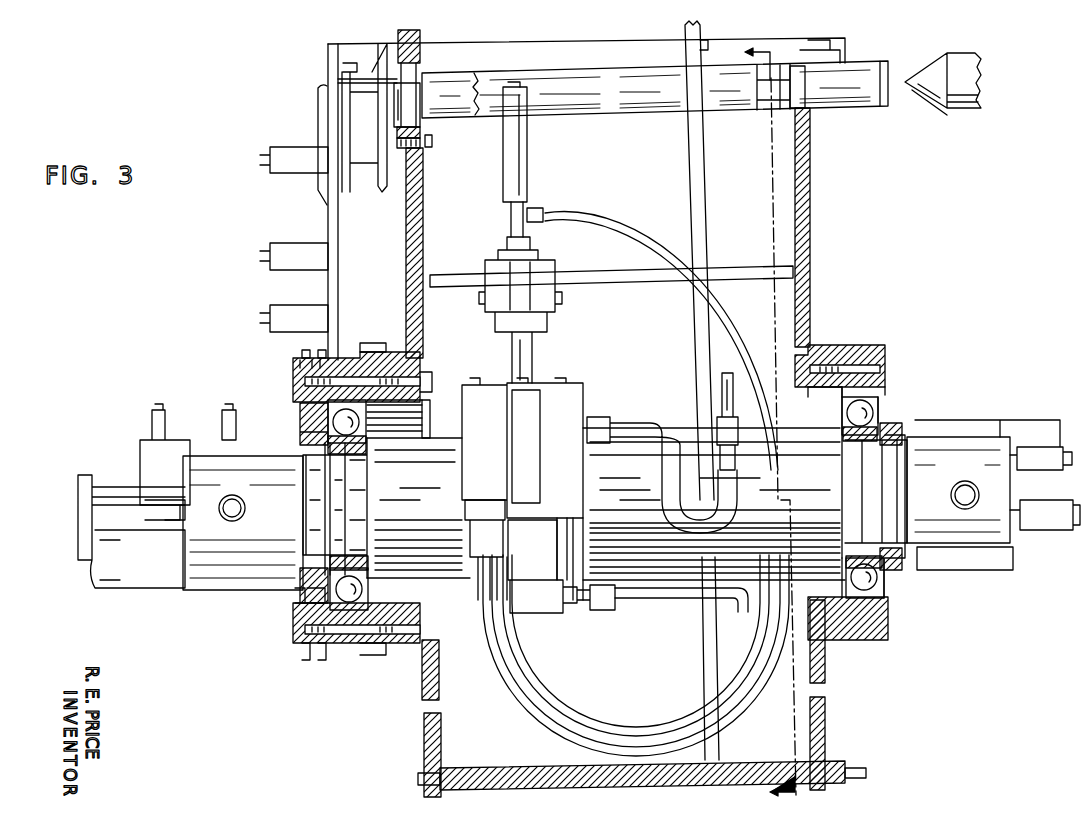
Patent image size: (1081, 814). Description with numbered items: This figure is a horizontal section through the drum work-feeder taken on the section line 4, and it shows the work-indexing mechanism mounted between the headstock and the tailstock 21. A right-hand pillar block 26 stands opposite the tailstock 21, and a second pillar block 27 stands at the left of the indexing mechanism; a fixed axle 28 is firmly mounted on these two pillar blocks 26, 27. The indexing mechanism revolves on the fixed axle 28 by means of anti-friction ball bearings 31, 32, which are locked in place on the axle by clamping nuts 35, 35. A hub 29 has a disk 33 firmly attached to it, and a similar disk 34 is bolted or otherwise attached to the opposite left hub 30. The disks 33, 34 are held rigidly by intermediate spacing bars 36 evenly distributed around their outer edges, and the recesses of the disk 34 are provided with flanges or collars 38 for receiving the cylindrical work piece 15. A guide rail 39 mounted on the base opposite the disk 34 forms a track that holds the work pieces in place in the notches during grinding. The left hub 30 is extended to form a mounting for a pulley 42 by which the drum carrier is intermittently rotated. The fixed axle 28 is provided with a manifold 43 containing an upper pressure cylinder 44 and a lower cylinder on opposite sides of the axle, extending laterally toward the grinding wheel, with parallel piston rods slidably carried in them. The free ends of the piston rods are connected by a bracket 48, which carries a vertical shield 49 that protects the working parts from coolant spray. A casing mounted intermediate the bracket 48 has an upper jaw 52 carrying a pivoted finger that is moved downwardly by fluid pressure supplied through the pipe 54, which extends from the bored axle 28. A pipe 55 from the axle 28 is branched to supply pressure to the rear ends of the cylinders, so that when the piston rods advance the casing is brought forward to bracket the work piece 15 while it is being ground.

The section line 4- 4 is at (770, 422).
The work piece 15 is at (567, 76).
The tailstock 21 is at (935, 78).
The right-hand pillar block 26 is at (970, 560).
The second pillar block 27 is at (243, 575).
The fixed axle 28 is at (958, 440).
The hub 29 is at (850, 362).
The left hub 30 is at (355, 365).
The anti-friction ball bearing 31 is at (880, 407).
The anti-friction ball bearing 32 is at (303, 420).
The disk 33 is at (810, 207).
The disk 34 is at (405, 236).
The clamping nuts 35 is at (305, 443).
The spacing bars 36 is at (735, 765).
The flanges or collars 38 is at (428, 136).
The guide rail 39 is at (422, 56).
The pulley 42 is at (300, 372).
The manifold 43 is at (578, 400).
The upper pressure cylinder 44 is at (535, 600).
The bracket 48 is at (548, 300).
The vertical shield 49 is at (607, 275).
The upper jaw 52 is at (508, 150).
The pipe 54 is at (613, 215).
The pipe 55 is at (660, 599).